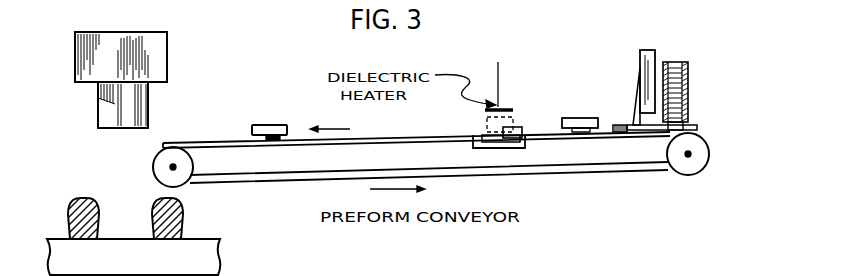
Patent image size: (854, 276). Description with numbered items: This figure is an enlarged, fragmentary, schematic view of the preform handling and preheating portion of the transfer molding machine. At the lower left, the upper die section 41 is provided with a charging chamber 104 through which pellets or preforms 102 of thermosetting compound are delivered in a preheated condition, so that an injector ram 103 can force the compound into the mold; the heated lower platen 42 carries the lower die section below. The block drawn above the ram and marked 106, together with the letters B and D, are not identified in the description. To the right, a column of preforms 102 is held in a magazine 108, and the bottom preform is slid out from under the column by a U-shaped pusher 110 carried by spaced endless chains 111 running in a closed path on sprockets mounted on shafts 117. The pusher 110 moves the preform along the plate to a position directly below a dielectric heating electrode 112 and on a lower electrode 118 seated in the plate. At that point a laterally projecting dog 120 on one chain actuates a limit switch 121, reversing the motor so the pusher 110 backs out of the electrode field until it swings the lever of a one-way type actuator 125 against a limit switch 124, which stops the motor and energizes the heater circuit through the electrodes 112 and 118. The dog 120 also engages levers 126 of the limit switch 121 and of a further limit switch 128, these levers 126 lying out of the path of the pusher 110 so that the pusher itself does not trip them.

The head of dielectric heating unit 106 is at (160, 55).
The injector ram 103 is at (132, 107).
The endless chains 111 is at (430, 169).
The shafts 117 is at (173, 167).
The limit switch 128 is at (262, 124).
The levers 126 is at (287, 143).
The heating station B is at (497, 74).
The dielectric heating electrode 112 is at (508, 105).
The preforms 102 is at (487, 124).
The U-shaped pusher 110 is at (517, 132).
The lower electrode 118 is at (510, 142).
The limit switch 121 is at (580, 123).
The dog 120 is at (617, 125).
The one-way type actuator 125 is at (632, 123).
The limit switch 124 is at (641, 55).
The dispensing station D is at (649, 42).
The magazine 108 is at (688, 63).
The charging chamber 104 is at (102, 202).
The upper die section 41 is at (173, 221).
The lower platen 42 is at (205, 256).